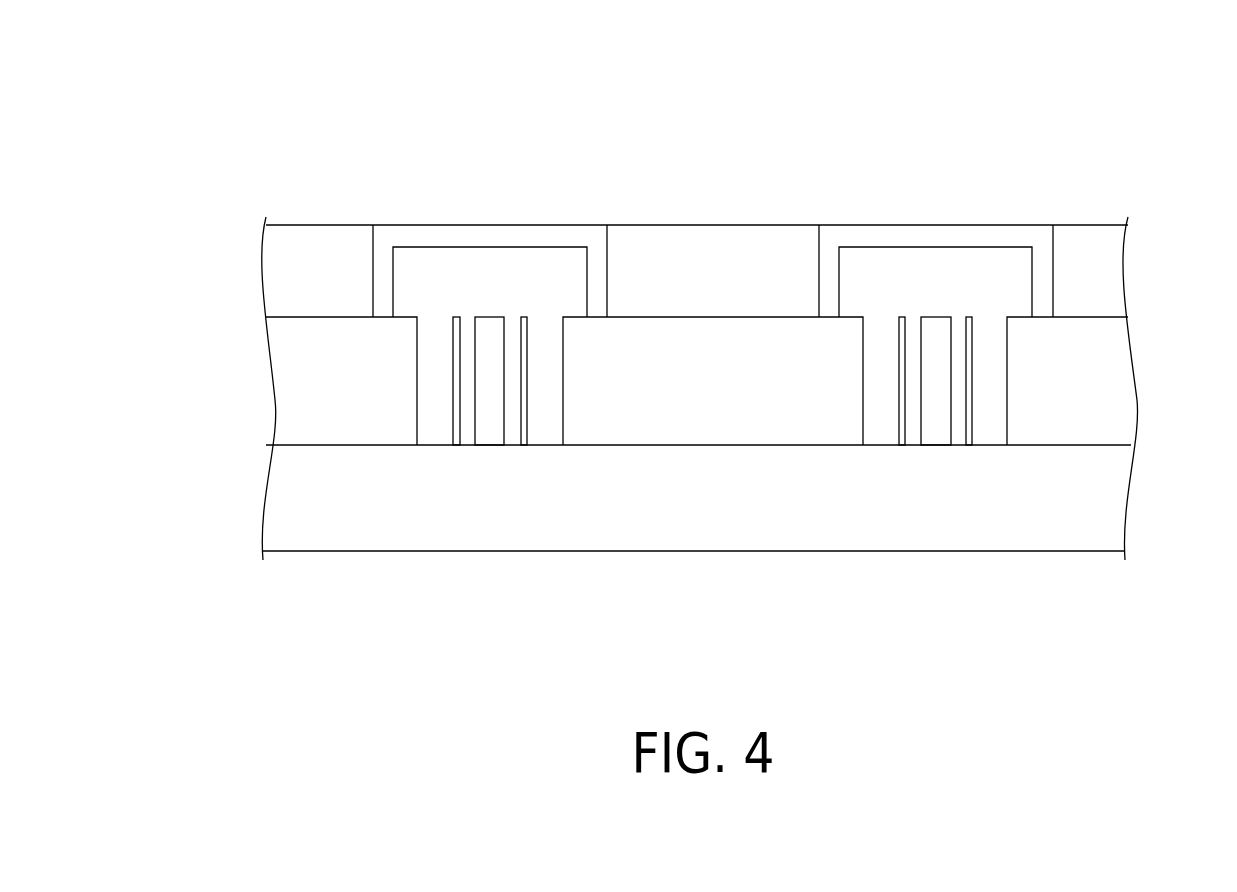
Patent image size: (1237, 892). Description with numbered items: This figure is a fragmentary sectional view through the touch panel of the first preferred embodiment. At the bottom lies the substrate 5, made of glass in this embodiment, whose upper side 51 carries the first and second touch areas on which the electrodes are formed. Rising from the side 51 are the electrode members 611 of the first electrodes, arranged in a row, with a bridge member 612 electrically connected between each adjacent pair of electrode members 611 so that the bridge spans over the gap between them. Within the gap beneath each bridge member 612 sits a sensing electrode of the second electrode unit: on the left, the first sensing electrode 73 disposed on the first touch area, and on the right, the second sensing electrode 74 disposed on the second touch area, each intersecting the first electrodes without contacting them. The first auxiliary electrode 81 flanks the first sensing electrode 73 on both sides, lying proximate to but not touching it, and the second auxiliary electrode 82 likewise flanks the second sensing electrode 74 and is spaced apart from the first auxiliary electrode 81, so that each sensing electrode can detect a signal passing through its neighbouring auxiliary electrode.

The substrate 5 is at (345, 557).
The side of the substrate 51 is at (333, 443).
The electrode members 611 is at (290, 350).
The bridge members 612 is at (491, 233).
The first sensing electrode 73 is at (491, 430).
The second sensing electrode 74 is at (935, 430).
The first auxiliary electrode 81 is at (455, 410).
The second auxiliary electrode 82 is at (902, 412).